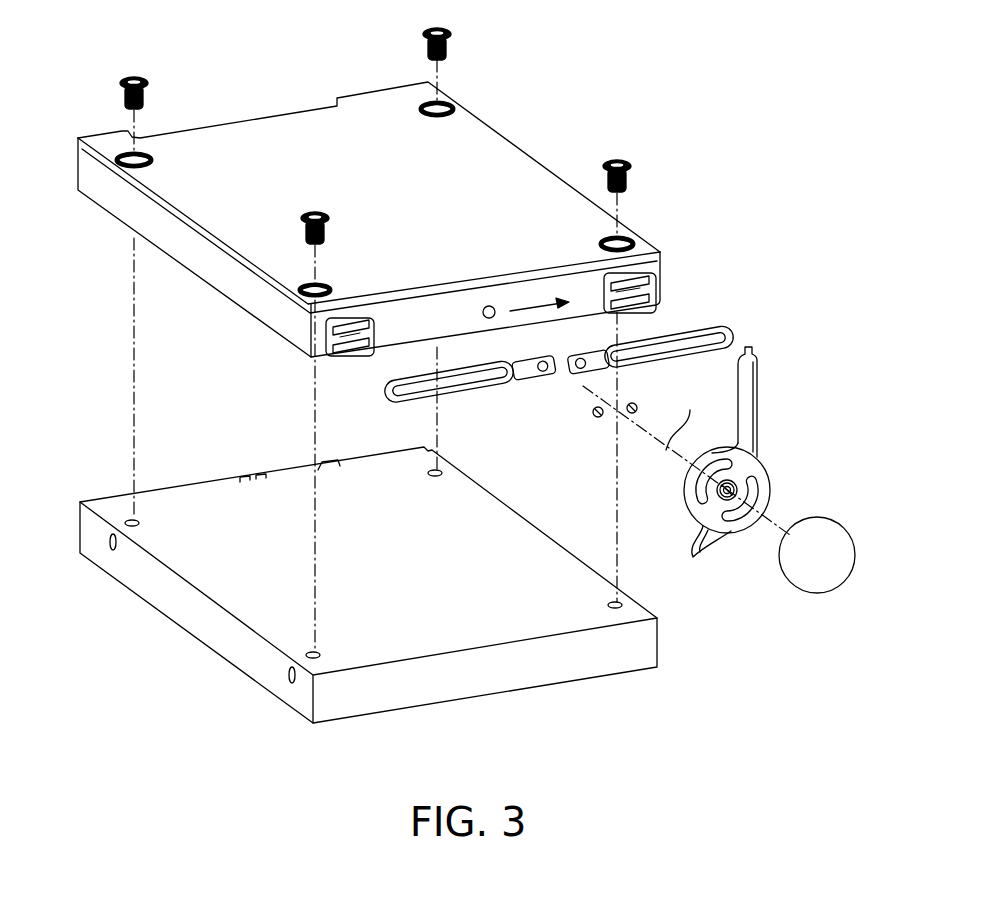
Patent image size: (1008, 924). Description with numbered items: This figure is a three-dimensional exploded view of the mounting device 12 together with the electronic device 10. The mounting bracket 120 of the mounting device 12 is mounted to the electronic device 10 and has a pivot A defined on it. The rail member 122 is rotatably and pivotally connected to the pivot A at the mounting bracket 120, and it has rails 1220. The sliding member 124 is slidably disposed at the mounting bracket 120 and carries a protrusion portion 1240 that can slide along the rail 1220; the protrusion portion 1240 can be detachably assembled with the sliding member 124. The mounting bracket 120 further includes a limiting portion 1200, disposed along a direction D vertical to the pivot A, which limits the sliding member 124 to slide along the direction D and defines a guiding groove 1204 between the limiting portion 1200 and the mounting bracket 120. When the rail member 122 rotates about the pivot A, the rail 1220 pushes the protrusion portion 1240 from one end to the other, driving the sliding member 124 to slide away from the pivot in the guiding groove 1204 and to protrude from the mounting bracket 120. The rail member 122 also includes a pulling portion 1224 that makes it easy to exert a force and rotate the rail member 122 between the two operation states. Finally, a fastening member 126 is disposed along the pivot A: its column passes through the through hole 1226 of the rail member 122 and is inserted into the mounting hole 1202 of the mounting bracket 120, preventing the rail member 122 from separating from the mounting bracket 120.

The electronic device 10 is at (195, 615).
The mounting device 12 is at (715, 124).
The mounting bracket 120 is at (511, 170).
The limiting portion 1200 is at (358, 322).
The mounting hole 1202 is at (490, 306).
The guiding groove 1204 is at (382, 333).
The sliding member 124 is at (455, 397).
The protrusion portion 1240 is at (628, 414).
The rail member 122 is at (768, 470).
The pulling portion 1224 is at (757, 383).
The through hole 1226 is at (748, 491).
The rail 1220 is at (713, 535).
The fastening member 126 is at (800, 572).